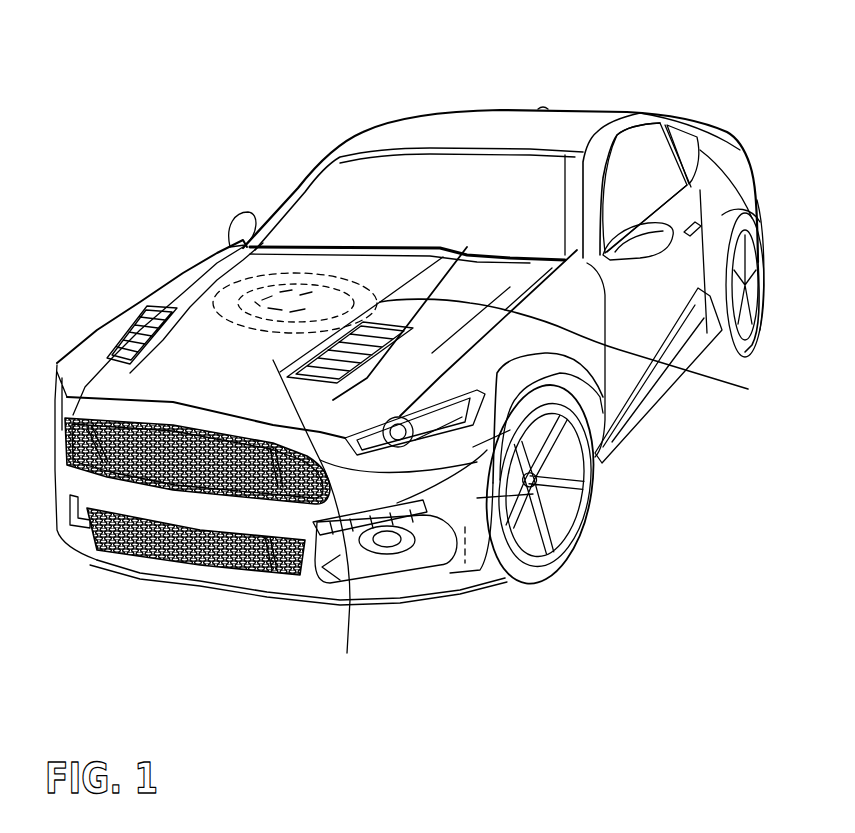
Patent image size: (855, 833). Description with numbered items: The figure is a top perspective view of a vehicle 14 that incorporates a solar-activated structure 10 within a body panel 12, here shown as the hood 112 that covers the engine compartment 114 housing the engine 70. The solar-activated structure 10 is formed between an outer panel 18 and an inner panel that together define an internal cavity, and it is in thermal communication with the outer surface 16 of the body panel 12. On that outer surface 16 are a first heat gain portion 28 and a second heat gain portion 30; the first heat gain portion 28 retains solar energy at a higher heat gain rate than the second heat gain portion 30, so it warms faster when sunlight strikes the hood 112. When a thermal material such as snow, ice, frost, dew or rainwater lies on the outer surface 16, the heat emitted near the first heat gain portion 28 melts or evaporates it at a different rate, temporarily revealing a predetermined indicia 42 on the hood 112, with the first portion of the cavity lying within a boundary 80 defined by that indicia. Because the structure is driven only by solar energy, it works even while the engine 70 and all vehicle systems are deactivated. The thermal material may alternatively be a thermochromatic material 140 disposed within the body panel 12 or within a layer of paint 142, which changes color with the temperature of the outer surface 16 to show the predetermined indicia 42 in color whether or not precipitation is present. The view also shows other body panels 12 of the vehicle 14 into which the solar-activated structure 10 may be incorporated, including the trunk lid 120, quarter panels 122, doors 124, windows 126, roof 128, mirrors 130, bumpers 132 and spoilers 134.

The solar-activated structure 10 is at (237, 266).
The body panel 12 is at (183, 266).
The vehicle 14 is at (416, 108).
The outer surface 16 is at (157, 513).
The outer panel 18 is at (100, 373).
The first heat gain portion 28 is at (444, 179).
The second heat gain portion 30 is at (316, 519).
The predetermined indicia 42 is at (300, 268).
The engine 70 is at (160, 275).
The boundary 80 is at (580, 351).
The hood 112 is at (93, 340).
The engine compartment 114 is at (163, 577).
The trunk lid 120 is at (697, 130).
The quarter panels 122 is at (520, 370).
The doors 124 is at (690, 255).
The windows 126 is at (470, 180).
The roof 128 is at (563, 127).
The mirrors 130 is at (660, 256).
The bumpers 132 is at (223, 513).
The spoilers 134 is at (713, 127).
The thermochromatic material 140 is at (480, 587).
The layer of paint 142 is at (580, 523).